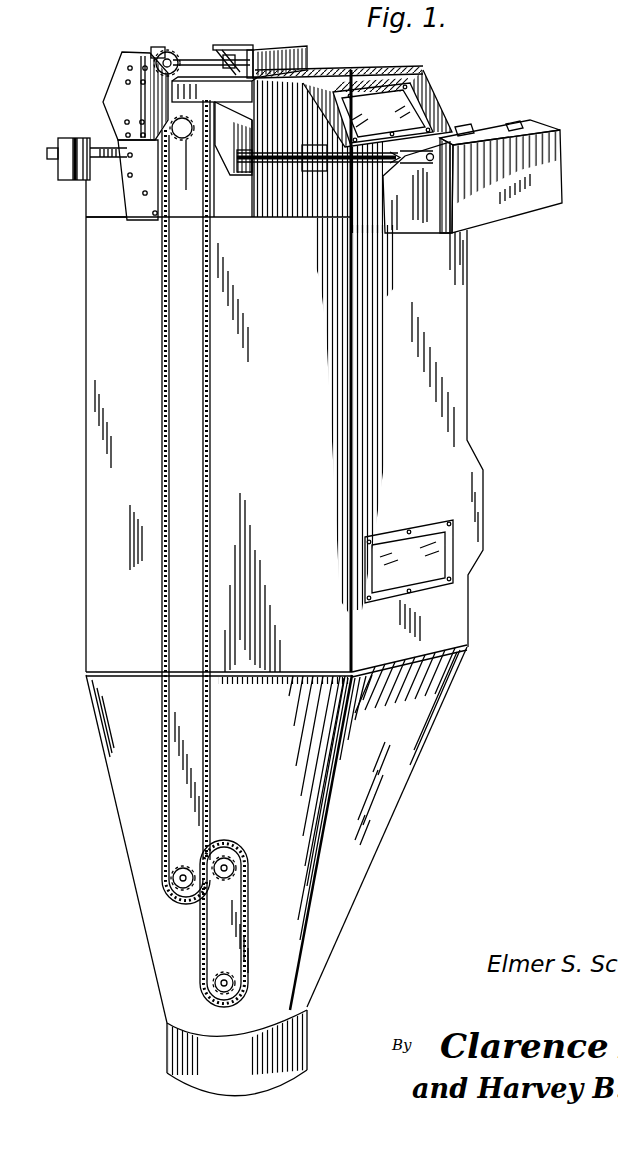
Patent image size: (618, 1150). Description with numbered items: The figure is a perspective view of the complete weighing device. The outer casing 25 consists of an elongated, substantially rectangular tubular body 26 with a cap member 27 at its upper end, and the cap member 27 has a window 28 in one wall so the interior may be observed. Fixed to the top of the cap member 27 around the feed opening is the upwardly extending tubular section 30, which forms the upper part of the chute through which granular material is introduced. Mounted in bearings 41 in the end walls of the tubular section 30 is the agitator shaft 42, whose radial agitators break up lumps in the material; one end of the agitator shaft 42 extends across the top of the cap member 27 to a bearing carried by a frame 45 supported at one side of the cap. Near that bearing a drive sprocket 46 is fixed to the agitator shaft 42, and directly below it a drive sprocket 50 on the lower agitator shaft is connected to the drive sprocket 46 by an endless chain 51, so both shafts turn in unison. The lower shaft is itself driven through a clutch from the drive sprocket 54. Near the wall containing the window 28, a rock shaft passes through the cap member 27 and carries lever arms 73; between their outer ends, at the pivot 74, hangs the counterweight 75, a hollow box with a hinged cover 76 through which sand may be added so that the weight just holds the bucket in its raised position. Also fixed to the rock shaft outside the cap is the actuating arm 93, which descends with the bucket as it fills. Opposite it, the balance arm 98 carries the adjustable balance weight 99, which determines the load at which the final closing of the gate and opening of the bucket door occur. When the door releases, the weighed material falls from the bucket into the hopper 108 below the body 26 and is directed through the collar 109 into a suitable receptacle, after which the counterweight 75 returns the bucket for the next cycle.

The outer casing 25 is at (464, 362).
The tubular body 26 is at (105, 360).
The cap member 27 is at (103, 187).
The window 28 is at (403, 115).
The tubular section 30 is at (299, 45).
The bearings 41 is at (233, 45).
The agitator shaft 42 is at (195, 59).
The frame 45 is at (115, 83).
The drive sprocket 46 is at (160, 53).
The drive sprocket 50 is at (166, 150).
The endless chain 51 is at (169, 51).
The drive sprocket 54 is at (195, 162).
The lever arms 73 is at (300, 215).
The pivot 74 is at (440, 128).
The counterweight 75 is at (533, 182).
The hinged cover 76 is at (496, 128).
The actuating arm 93 is at (285, 162).
The balance arm 98 is at (97, 150).
The balance weight 99 is at (65, 165).
The hopper 108 is at (381, 839).
The collar 109 is at (290, 1050).